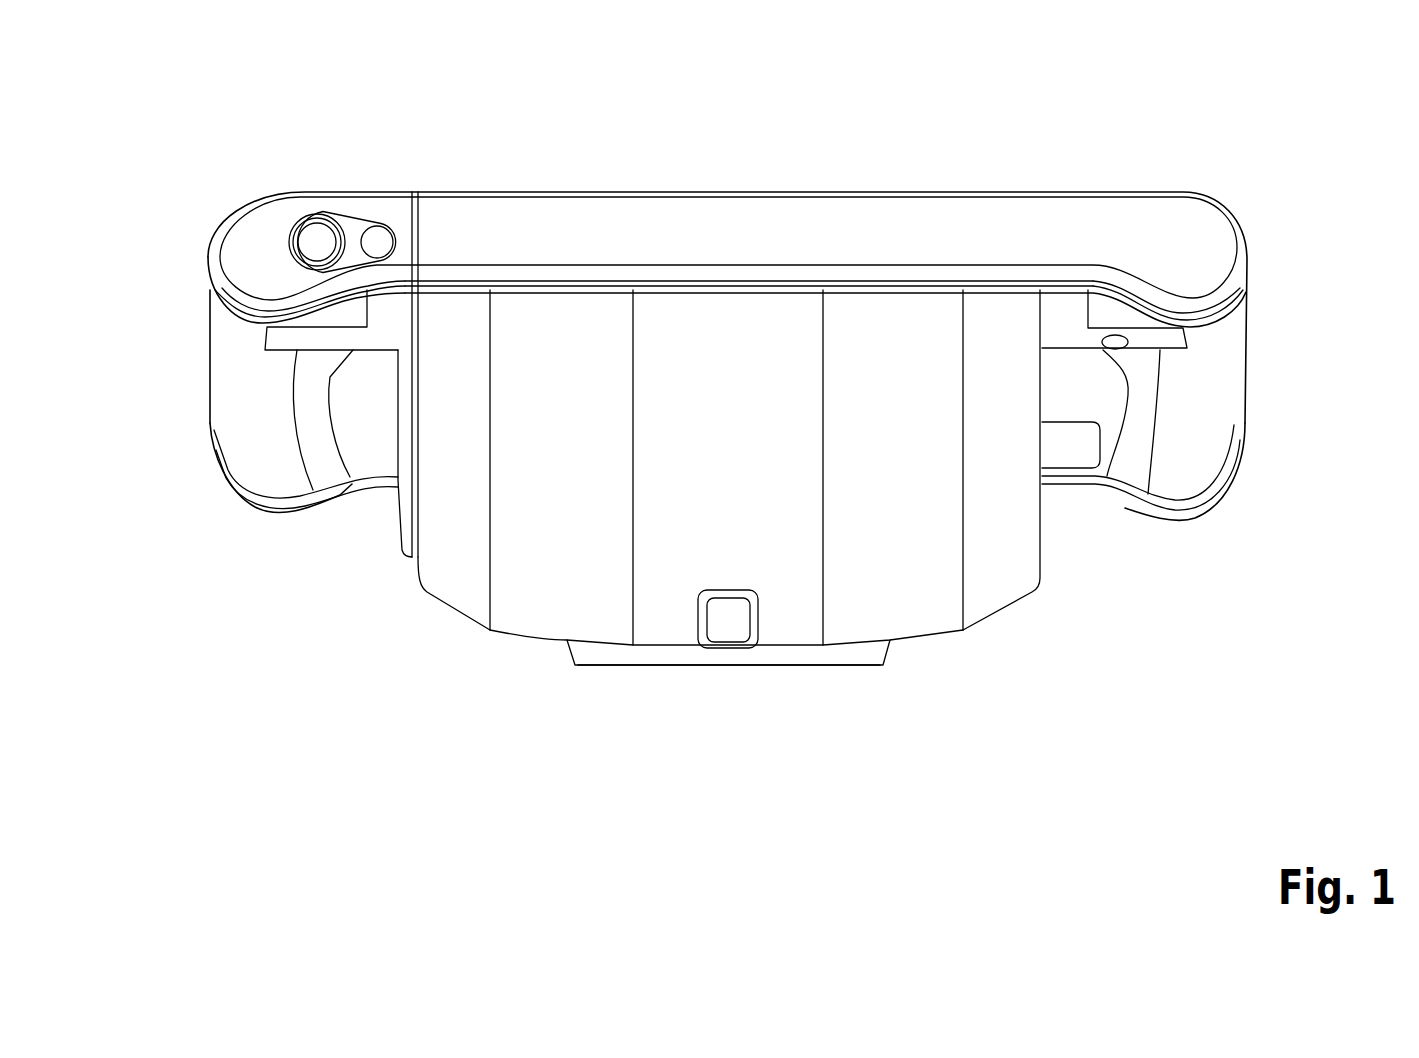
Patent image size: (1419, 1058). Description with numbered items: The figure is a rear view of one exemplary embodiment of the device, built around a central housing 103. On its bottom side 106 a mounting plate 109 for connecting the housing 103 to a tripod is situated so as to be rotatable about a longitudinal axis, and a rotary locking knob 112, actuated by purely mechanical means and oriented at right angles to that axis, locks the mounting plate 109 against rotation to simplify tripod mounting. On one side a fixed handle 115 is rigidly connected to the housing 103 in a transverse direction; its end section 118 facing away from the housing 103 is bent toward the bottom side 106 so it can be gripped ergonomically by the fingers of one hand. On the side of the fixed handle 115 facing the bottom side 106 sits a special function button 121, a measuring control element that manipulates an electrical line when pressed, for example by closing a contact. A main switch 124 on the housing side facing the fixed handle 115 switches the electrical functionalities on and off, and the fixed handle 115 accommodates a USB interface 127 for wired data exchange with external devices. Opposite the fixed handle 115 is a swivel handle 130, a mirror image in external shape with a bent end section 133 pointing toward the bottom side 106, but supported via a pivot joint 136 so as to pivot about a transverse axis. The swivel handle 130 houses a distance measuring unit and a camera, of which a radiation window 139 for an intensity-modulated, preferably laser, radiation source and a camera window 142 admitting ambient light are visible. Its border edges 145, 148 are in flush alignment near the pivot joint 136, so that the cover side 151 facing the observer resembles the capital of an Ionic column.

The central housing 103 is at (755, 480).
The bottom side 106 is at (581, 683).
The mounting plate 109 is at (641, 668).
The rotary locking knob 112 is at (726, 632).
The fixed handle 115 is at (1141, 522).
The end section 118 is at (1198, 471).
The special function button 121 is at (1114, 334).
The main switch 124 is at (1049, 413).
The USB interface 127 is at (1074, 452).
The swivel handle 130 is at (286, 528).
The bent end section 133 is at (246, 397).
The pivot joint 136 is at (418, 407).
The radiation window 139 is at (376, 243).
The camera window 142 is at (318, 246).
The border edge 145 is at (690, 190).
The border edge 148 is at (722, 283).
The cover side 151 is at (547, 228).